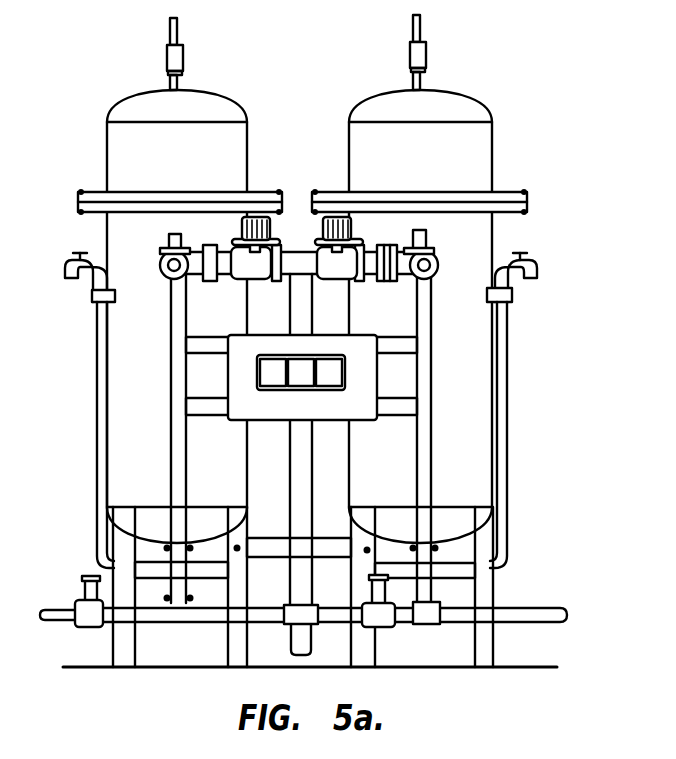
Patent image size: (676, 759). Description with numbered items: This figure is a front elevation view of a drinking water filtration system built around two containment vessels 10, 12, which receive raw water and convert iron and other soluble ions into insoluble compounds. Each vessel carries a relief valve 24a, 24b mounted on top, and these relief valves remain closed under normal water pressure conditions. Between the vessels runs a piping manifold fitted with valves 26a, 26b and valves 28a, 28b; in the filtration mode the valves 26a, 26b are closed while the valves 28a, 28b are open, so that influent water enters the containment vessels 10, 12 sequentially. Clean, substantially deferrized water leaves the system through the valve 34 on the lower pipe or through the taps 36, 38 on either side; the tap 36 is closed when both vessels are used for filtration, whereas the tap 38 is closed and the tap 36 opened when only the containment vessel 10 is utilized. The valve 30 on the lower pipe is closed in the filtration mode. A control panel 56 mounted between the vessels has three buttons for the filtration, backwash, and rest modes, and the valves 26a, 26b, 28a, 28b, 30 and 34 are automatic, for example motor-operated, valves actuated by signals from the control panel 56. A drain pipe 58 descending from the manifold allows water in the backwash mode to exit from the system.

The first containment vessel 10 is at (475, 147).
The second containment vessel 12 is at (128, 142).
The relief valve 24a is at (178, 48).
The relief valve 24b is at (420, 47).
The automatic valve 26a is at (279, 234).
The automatic valve 26b is at (316, 234).
The automatic valve 28a is at (168, 237).
The automatic valve 28b is at (427, 238).
The automatic valve 30 is at (384, 588).
The automatic valve 34 is at (84, 577).
The tap 36 is at (536, 260).
The tap 38 is at (67, 257).
The control panel 56 is at (352, 348).
The drain pipe 58 is at (290, 585).